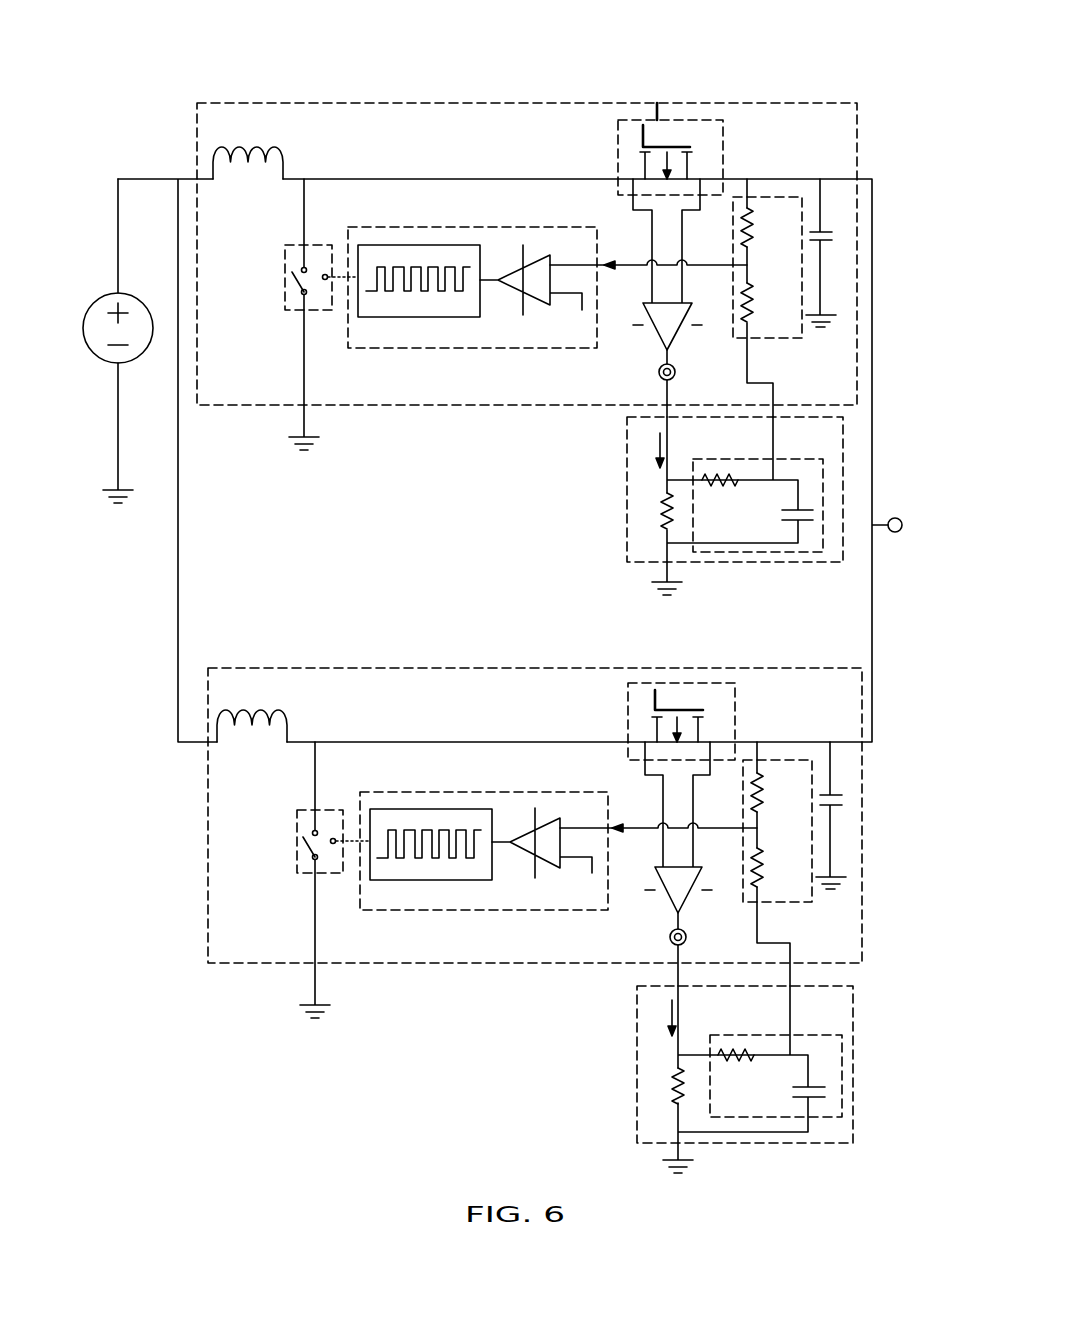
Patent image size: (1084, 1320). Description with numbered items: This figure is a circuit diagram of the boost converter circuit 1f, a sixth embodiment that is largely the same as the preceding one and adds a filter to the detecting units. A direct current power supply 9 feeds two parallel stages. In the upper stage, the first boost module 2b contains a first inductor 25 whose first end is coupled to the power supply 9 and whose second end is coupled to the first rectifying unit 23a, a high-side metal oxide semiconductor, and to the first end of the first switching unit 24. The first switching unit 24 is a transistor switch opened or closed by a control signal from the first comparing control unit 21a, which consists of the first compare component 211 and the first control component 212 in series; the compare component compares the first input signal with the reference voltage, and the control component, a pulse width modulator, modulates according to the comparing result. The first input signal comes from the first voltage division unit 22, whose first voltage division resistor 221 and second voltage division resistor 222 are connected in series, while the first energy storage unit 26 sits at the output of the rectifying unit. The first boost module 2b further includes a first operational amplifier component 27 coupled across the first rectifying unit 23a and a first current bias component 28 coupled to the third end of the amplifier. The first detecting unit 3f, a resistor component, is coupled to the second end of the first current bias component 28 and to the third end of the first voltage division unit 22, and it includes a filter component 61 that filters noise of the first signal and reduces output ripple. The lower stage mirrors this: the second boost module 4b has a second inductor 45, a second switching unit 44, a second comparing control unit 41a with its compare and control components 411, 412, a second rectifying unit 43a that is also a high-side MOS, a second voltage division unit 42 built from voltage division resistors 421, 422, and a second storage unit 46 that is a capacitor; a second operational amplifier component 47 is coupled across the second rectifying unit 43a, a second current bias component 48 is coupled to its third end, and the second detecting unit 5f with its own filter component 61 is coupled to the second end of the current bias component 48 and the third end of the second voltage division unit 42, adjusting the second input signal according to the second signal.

The boost converter circuit 1f is at (233, 52).
The direct current power supply 9 is at (130, 293).
The first boost module 2b is at (787, 102).
The first inductor 25 is at (278, 146).
The first switching unit 24 is at (290, 245).
The first comparing control unit 21a is at (385, 226).
The first control component 212 is at (455, 244).
The first compare component 211 is at (540, 252).
The first rectifying unit 23a is at (656, 100).
The first operational amplifier component 27 is at (676, 264).
The first current bias component 28 is at (681, 383).
The first voltage division unit 22 is at (770, 178).
The first voltage division resistor 221 is at (767, 227).
The second voltage division resistor 222 is at (767, 302).
The first energy storage unit 26 is at (827, 253).
The first detecting unit 3f is at (626, 516).
The filter component 61 is at (790, 459).
The second boost module 4b is at (431, 668).
The second inductor 45 is at (282, 708).
The second switching unit 44 is at (300, 810).
The second comparing control unit 41a is at (398, 792).
The second pulse width modulation generator 412 is at (460, 808).
The second comparator 411 is at (552, 816).
The second rectifying unit 43a is at (627, 702).
The second operational amplifier component 47 is at (686, 827).
The second current bias component 48 is at (693, 949).
The second voltage division unit 42 is at (780, 742).
The third divider resistor 421 is at (777, 792).
The fourth divider resistor 422 is at (777, 867).
The second storage unit 46 is at (835, 815).
The second detecting unit 5f is at (636, 1085).